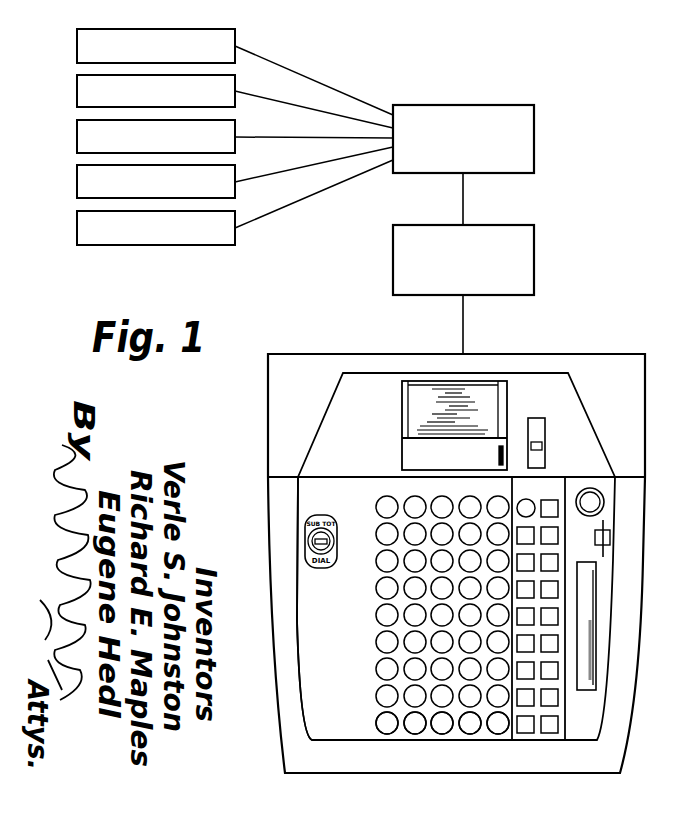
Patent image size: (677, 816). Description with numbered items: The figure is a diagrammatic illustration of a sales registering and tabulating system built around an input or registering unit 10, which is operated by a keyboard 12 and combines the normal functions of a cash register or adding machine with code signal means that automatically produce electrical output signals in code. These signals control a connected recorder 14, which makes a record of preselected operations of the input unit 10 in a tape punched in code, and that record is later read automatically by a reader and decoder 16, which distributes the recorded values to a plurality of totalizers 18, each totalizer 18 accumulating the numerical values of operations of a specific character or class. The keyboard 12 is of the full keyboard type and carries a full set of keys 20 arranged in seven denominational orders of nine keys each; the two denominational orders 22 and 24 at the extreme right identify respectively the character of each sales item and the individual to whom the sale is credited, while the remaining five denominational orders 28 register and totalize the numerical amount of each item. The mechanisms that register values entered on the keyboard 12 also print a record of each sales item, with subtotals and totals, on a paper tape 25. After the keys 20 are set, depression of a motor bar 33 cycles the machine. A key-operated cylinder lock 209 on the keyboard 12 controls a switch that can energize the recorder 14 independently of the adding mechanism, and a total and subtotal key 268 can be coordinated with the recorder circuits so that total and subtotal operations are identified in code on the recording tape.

The input unit 10 is at (596, 328).
The keyboard 12 is at (327, 722).
The recorder 14 is at (534, 254).
The reader and decoder 16 is at (534, 143).
The totalizers 18 is at (77, 48).
The keys 20 is at (385, 599).
The denominational order 22 is at (526, 734).
The denominational order 24 is at (550, 734).
The paper tape 25 is at (490, 402).
The denominational orders 28 is at (441, 734).
The motor bar 33 is at (594, 650).
The cylinder lock 209 is at (598, 491).
The total and subtotal key 268 is at (545, 443).